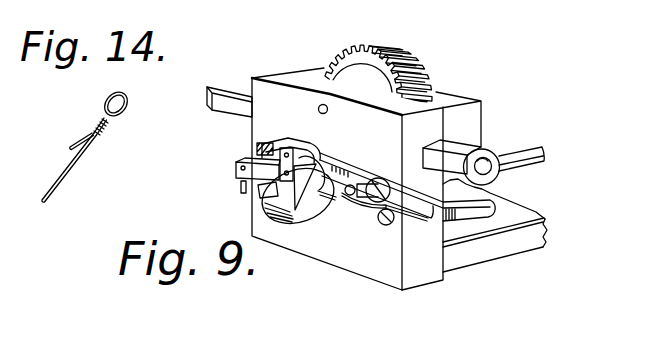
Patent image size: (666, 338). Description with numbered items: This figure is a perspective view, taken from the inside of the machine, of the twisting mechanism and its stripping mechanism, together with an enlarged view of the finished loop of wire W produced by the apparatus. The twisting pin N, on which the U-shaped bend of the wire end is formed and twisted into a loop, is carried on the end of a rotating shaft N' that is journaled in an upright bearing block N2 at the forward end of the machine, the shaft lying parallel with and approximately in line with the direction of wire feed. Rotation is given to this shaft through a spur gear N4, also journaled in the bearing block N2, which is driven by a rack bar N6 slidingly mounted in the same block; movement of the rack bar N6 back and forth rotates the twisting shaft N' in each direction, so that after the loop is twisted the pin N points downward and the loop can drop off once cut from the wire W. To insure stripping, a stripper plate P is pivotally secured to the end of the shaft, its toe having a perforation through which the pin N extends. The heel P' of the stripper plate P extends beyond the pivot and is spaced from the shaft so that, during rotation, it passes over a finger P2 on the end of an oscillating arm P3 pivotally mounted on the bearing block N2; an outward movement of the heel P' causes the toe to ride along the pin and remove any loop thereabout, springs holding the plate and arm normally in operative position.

In FIG. 14, the wire W is at (68, 168).
In FIG. 9, the bearing block N2 is at (366, 179).
In FIG. 9, the rack bar N6 is at (227, 88).
In FIG. 9, the spur gear N4 is at (402, 52).
In FIG. 9, the rotating shaft N' is at (483, 144).
In FIG. 9, the stripper plate P is at (236, 173).
In FIG. 9, the twisting pin N is at (225, 200).
In FIG. 9, the heel P' is at (288, 150).
In FIG. 9, the finger P2 is at (318, 163).
In FIG. 9, the oscillating arm P3 is at (378, 165).